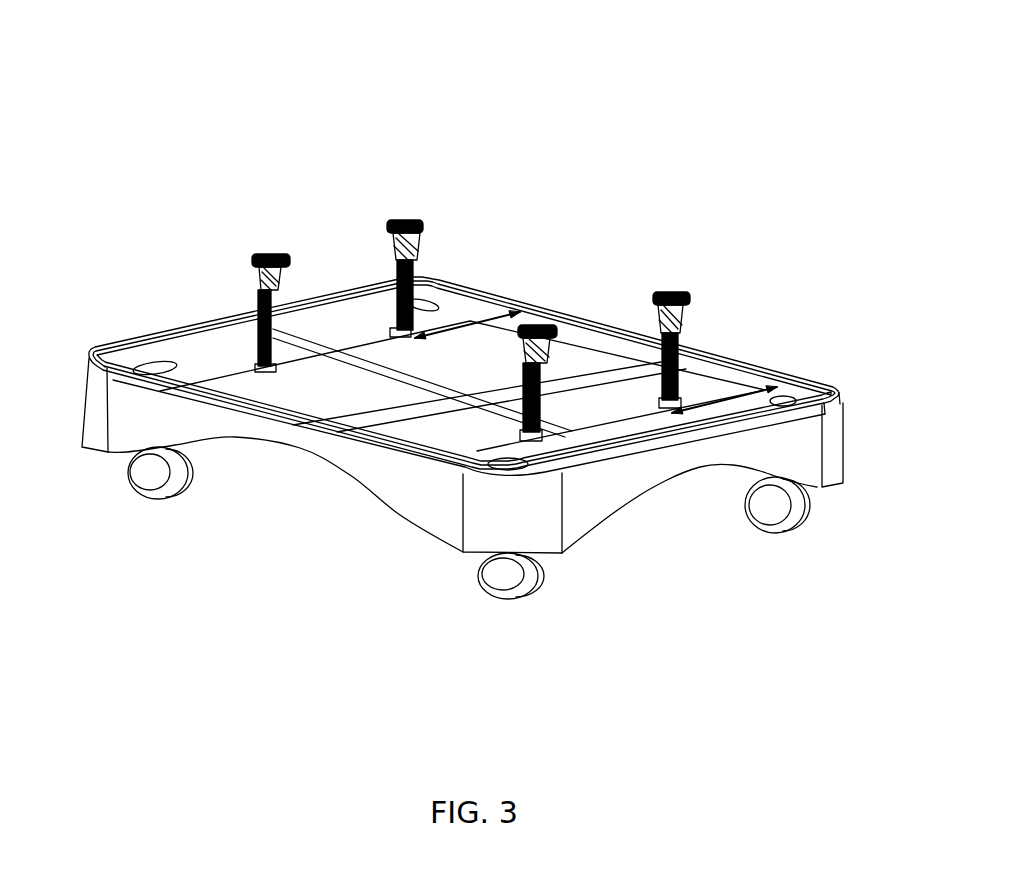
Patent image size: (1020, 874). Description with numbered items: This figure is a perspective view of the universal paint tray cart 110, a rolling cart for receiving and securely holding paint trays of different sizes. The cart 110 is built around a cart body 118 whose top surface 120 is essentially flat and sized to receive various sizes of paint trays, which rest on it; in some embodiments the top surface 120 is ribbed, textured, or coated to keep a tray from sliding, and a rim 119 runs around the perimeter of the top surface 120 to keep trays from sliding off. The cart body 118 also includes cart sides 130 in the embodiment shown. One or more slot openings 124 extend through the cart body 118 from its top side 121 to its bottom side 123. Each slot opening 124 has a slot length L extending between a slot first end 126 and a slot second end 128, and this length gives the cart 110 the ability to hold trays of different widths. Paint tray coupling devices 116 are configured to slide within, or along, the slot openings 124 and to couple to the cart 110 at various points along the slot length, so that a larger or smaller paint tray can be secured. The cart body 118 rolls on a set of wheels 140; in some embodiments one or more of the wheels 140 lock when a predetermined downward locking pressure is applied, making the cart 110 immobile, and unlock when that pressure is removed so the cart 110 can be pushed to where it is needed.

The universal paint tray cart 110 is at (690, 108).
The paint tray coupling device 116 is at (480, 305).
The cart body 118 is at (813, 452).
The rim 119 is at (820, 387).
The top surface 120 is at (299, 393).
The top side 121 is at (476, 347).
The bottom side 123 is at (486, 514).
The slot opening 124 is at (225, 375).
The slot first end 126 is at (491, 305).
The slot second end 128 is at (392, 333).
The cart sides 130 is at (385, 482).
The set of wheels 140 is at (158, 480).